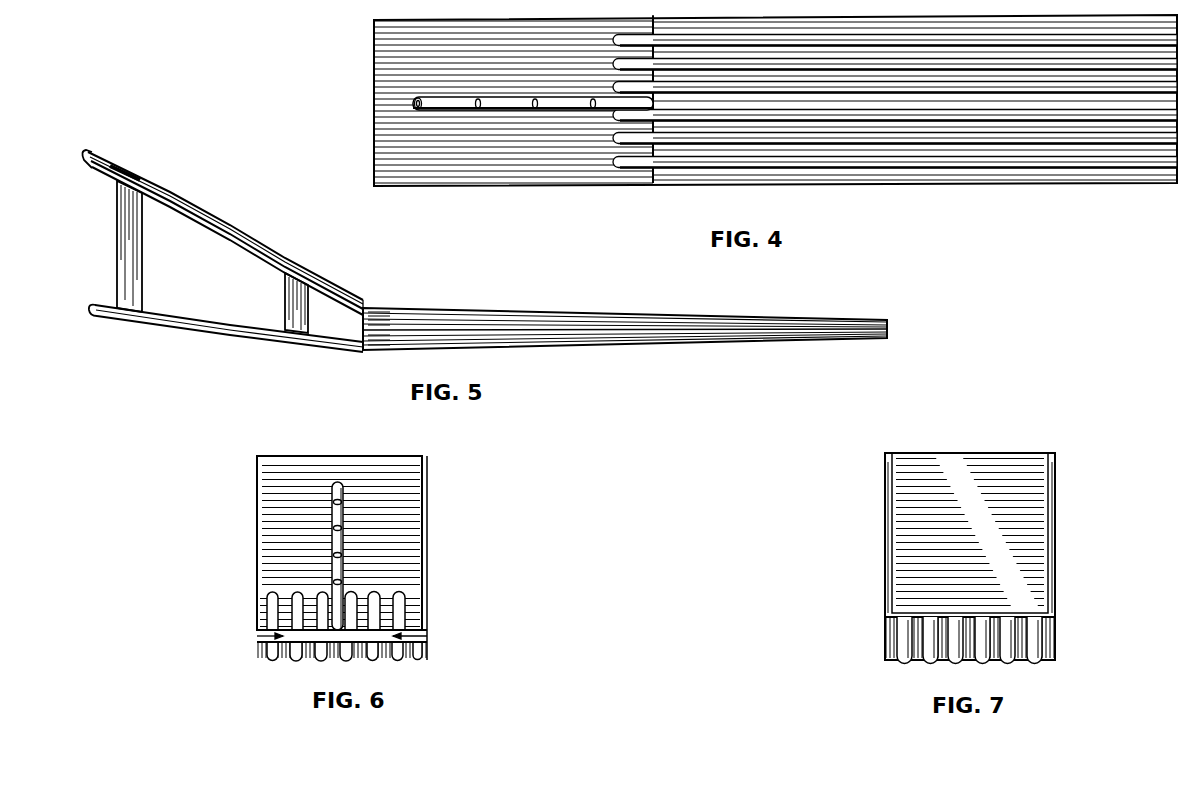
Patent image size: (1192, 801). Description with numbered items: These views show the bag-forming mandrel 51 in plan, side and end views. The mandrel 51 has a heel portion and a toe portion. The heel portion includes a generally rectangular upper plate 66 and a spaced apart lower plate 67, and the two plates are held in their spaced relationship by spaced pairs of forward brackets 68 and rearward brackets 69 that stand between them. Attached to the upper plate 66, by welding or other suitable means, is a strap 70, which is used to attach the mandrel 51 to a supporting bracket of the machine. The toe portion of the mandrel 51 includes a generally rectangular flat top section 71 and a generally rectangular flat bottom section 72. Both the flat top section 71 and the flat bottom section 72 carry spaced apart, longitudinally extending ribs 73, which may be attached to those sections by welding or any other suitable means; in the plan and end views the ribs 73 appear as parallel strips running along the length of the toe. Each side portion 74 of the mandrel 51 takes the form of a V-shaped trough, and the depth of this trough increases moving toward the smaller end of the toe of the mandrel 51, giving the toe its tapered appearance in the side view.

In FIG. 4, the bag-forming mandrel 51 is at (775, 116).
In FIG. 5, the bag-forming mandrel 51 is at (484, 258).
In FIG. 6, the bag-forming mandrel 51 is at (337, 572).
In FIG. 7, the bag-forming mandrel 51 is at (975, 571).
In FIG. 4, the upper plate 66 is at (453, 75).
In FIG. 5, the upper plate 66 is at (108, 163).
In FIG. 6, the upper plate 66 is at (315, 510).
In FIG. 7, the upper plate 66 is at (1016, 510).
In FIG. 5, the lower plate 67 is at (217, 324).
In FIG. 7, the lower plate 67 is at (1051, 637).
In FIG. 5, the forward brackets 68 is at (125, 228).
In FIG. 7, the forward brackets 68 is at (888, 562).
In FIG. 5, the rearward brackets 69 is at (293, 310).
In FIG. 4, the strap 70 is at (483, 112).
In FIG. 5, the strap 70 is at (198, 212).
In FIG. 6, the strap 70 is at (333, 568).
In FIG. 4, the flat top section 71 is at (962, 176).
In FIG. 5, the flat top section 71 is at (460, 313).
In FIG. 6, the flat top section 71 is at (257, 622).
In FIG. 5, the flat bottom section 72 is at (530, 346).
In FIG. 6, the flat bottom section 72 is at (420, 657).
In FIG. 4, the ribs 73 is at (1010, 164).
In FIG. 5, the ribs 73 is at (660, 315).
In FIG. 6, the ribs 73 is at (403, 603).
In FIG. 7, the ribs 73 is at (982, 658).
In FIG. 5, the side portion 74 is at (415, 340).
In FIG. 6, the side portion 74 is at (257, 635).